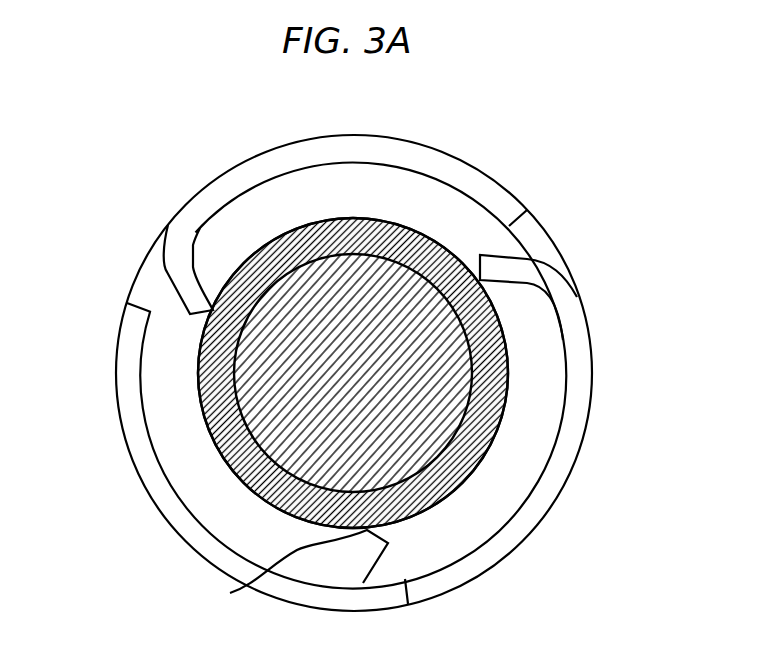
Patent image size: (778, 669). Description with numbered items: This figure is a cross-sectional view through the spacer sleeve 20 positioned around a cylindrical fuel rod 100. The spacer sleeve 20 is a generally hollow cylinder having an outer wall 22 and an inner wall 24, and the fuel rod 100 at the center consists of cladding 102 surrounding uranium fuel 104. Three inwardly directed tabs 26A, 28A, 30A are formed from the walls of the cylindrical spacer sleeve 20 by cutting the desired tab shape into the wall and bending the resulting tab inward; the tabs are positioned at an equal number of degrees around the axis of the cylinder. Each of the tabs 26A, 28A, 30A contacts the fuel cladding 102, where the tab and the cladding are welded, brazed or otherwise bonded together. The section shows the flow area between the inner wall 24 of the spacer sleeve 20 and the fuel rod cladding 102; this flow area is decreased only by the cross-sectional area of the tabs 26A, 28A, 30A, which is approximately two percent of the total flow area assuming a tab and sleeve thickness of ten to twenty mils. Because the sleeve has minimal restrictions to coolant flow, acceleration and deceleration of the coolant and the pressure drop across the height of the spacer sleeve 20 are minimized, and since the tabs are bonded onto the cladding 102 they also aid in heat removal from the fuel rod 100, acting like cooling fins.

The spacer sleeve 20 is at (616, 242).
The outer wall 22 is at (167, 520).
The inner wall 24 is at (445, 565).
The inwardly directed tab 26A is at (504, 257).
The inwardly directed tab 28A is at (222, 232).
The inwardly directed tab 30A is at (250, 587).
The fuel rod 100 is at (176, 399).
The cladding 102 is at (508, 390).
The uranium fuel 104 is at (397, 290).